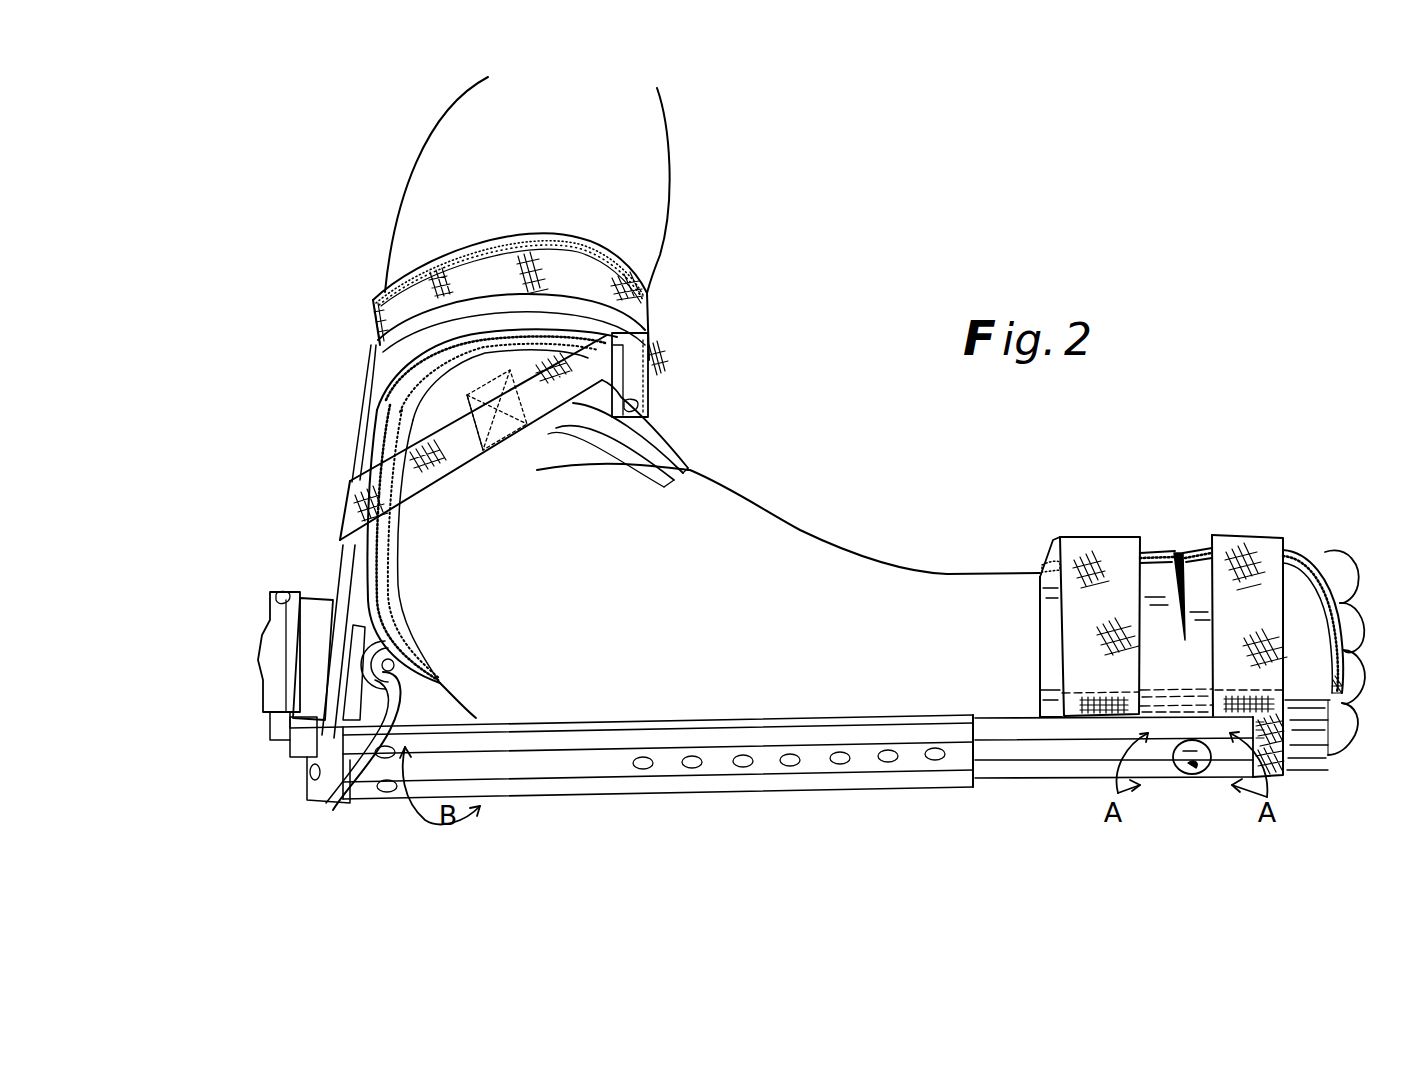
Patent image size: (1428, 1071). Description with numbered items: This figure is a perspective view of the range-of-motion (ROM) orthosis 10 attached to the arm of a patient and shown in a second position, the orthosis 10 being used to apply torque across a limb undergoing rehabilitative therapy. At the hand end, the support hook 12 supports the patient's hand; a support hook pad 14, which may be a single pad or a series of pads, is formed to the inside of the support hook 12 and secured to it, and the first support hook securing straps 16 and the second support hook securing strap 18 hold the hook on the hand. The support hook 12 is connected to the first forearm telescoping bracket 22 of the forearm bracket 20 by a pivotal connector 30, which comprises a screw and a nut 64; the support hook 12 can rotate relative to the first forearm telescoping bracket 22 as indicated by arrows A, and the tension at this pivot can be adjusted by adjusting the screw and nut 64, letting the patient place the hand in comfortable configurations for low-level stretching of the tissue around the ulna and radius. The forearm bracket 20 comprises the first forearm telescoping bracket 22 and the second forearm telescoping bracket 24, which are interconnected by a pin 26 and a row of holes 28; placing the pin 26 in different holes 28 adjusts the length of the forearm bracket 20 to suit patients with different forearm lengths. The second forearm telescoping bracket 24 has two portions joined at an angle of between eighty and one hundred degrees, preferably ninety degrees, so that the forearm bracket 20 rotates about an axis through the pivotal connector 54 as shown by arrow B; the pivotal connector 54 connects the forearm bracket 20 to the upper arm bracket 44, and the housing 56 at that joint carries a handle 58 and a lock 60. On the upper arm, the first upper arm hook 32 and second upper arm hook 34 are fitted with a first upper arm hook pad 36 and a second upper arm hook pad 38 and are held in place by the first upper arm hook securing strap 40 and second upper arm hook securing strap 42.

The ROM orthosis 10 is at (1300, 518).
The support hook 12 is at (1175, 550).
The support hook pad 14 is at (1320, 560).
The first support hook securing straps 16 is at (1234, 535).
The second support hook securing strap 18 is at (1077, 535).
The forearm bracket 20 is at (957, 787).
The first forearm telescoping bracket 22 is at (1023, 782).
The second forearm telescoping bracket 24 is at (631, 771).
The pin 26 is at (790, 766).
The holes 28 is at (881, 765).
The pivotal connector 30 is at (1212, 790).
The first upper arm hook 32 is at (370, 403).
The second upper arm hook 34 is at (687, 464).
The first upper arm hook pad 36 is at (590, 246).
The second upper arm hook pad 38 is at (373, 560).
The first upper arm hook securing strap 40 is at (648, 318).
The second upper arm hook securing strap 42 is at (667, 397).
The upper arm bracket 44 is at (340, 587).
The pivotal connector 54 is at (353, 792).
The housing 56 is at (272, 722).
The handle 58 is at (270, 668).
The lock 60 is at (292, 757).
The nut 64 is at (1180, 778).